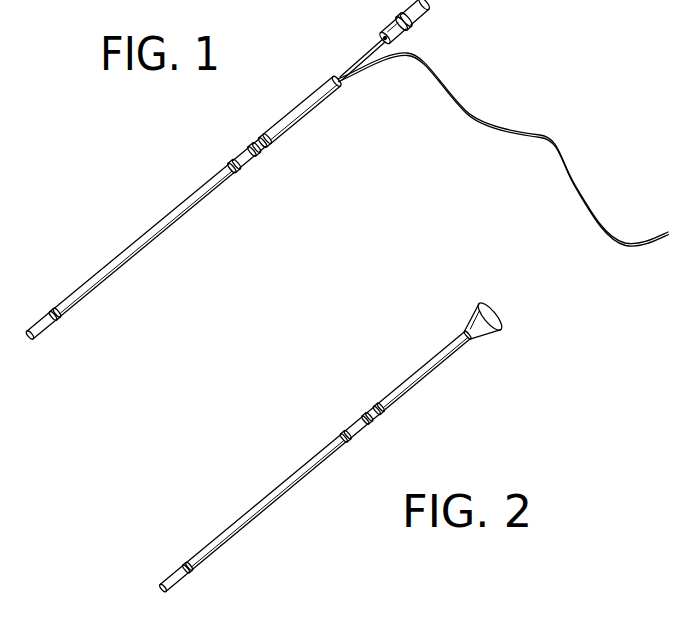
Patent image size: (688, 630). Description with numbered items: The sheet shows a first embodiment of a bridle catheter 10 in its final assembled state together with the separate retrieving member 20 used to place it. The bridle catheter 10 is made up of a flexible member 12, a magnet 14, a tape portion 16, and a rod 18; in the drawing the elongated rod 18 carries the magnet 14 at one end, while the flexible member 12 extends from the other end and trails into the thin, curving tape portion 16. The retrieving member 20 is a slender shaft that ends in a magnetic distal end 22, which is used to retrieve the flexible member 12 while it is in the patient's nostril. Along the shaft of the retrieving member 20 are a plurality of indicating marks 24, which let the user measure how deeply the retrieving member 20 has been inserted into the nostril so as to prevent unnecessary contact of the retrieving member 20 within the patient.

In FIG. 1, the bridle catheter 10 is at (84, 216).
In FIG. 1, the flexible member 12 is at (170, 225).
In FIG. 1, the magnet 14 is at (43, 332).
In FIG. 1, the tape portion 16 is at (547, 137).
In FIG. 1, the rod 18 is at (373, 55).
In FIG. 2, the retrieving member 20 is at (430, 375).
In FIG. 2, the magnetic distal end 22 is at (182, 583).
In FIG. 2, the indicating marks 24 is at (377, 408).